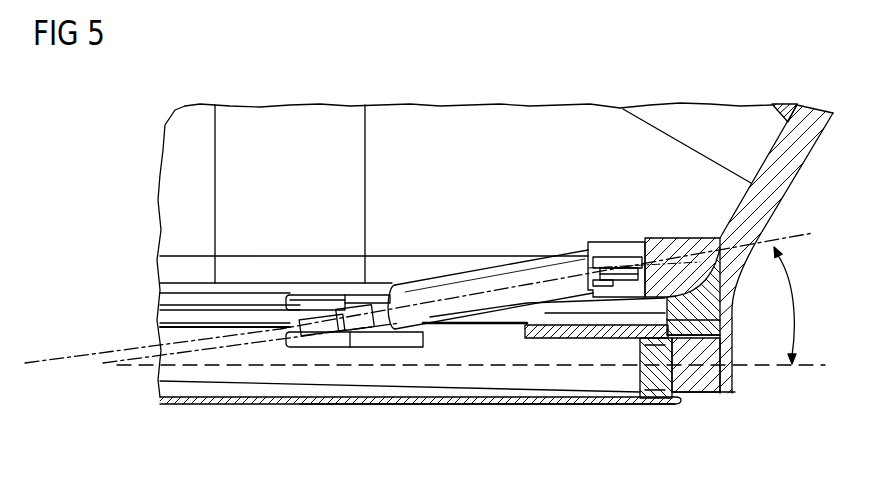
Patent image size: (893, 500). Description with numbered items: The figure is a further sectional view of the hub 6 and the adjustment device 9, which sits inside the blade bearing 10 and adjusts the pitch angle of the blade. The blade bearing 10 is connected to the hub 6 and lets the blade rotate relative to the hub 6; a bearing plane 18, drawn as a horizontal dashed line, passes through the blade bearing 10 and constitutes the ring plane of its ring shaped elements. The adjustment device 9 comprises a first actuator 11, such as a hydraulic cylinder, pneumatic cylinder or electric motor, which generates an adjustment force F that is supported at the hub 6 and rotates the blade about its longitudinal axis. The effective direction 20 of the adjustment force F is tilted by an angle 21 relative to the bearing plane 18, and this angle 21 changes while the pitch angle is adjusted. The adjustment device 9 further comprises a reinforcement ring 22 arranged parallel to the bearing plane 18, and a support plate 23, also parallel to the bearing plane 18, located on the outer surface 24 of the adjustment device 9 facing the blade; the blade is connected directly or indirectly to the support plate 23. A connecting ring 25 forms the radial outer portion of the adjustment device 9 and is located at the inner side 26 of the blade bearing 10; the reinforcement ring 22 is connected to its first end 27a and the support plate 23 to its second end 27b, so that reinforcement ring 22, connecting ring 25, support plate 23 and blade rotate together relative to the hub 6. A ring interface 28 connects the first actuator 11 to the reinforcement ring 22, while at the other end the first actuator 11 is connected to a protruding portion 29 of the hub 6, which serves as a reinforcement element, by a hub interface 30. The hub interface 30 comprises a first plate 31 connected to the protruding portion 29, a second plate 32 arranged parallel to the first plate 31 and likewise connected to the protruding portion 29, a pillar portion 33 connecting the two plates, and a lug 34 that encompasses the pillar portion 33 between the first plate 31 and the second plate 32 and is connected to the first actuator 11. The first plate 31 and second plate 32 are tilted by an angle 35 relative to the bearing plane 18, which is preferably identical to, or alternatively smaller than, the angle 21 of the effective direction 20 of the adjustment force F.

The hub 6 is at (277, 92).
The adjustment device 9 is at (372, 407).
The blade bearing 10 is at (682, 391).
The first actuator 11 is at (482, 280).
The bearing plane 18 is at (793, 368).
The effective direction 20 is at (812, 238).
The angle 21 is at (793, 318).
The reinforcement ring 22 is at (546, 340).
The support plate 23 is at (485, 406).
The outer surface 24 is at (445, 405).
The connecting ring 25 is at (645, 382).
The inner side 26 is at (673, 353).
The first end 27a is at (705, 330).
The second end 27b is at (655, 400).
The ring interface 28 is at (314, 280).
The protruding portion 29 is at (684, 246).
The hub interface 30 is at (639, 225).
The first plate 31 is at (610, 296).
The second plate 32 is at (597, 250).
The pillar portion 33 is at (618, 280).
The lug 34 is at (626, 262).
The angle 35 is at (722, 306).
The adjustment force F is at (364, 316).